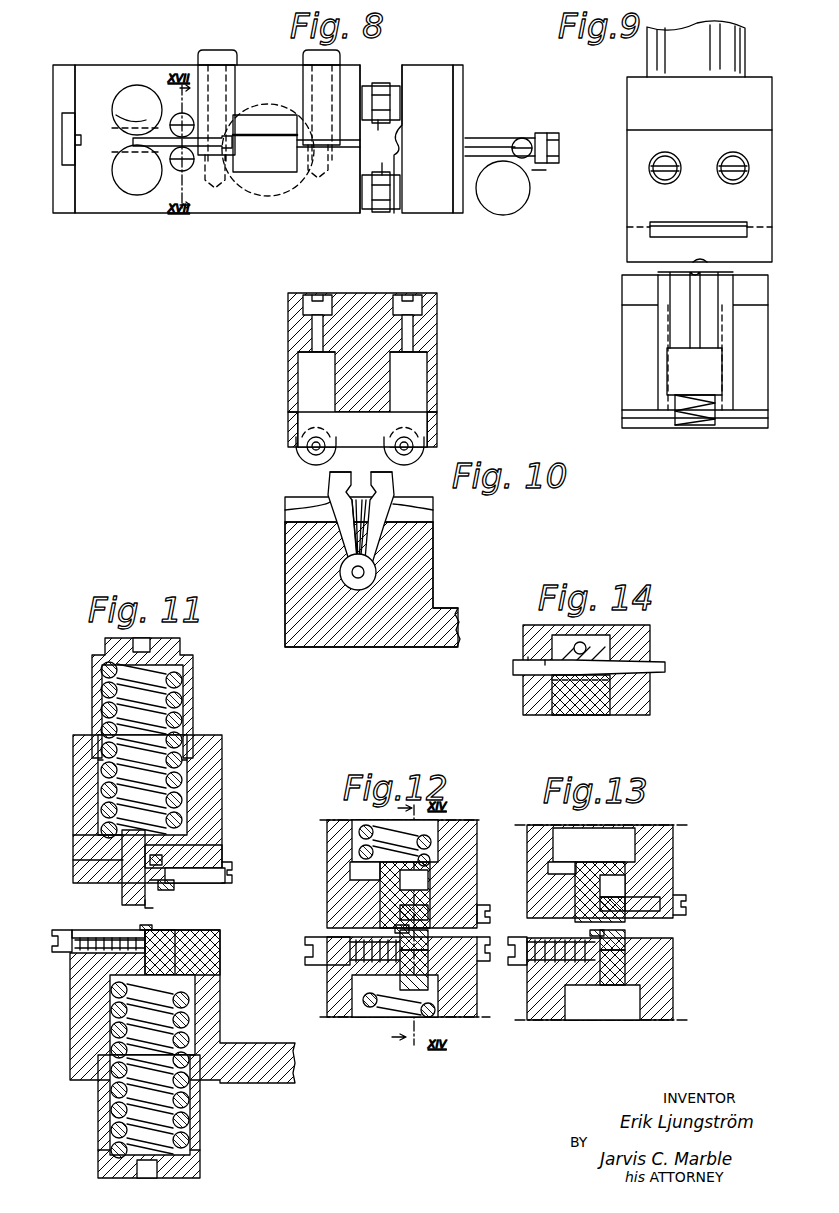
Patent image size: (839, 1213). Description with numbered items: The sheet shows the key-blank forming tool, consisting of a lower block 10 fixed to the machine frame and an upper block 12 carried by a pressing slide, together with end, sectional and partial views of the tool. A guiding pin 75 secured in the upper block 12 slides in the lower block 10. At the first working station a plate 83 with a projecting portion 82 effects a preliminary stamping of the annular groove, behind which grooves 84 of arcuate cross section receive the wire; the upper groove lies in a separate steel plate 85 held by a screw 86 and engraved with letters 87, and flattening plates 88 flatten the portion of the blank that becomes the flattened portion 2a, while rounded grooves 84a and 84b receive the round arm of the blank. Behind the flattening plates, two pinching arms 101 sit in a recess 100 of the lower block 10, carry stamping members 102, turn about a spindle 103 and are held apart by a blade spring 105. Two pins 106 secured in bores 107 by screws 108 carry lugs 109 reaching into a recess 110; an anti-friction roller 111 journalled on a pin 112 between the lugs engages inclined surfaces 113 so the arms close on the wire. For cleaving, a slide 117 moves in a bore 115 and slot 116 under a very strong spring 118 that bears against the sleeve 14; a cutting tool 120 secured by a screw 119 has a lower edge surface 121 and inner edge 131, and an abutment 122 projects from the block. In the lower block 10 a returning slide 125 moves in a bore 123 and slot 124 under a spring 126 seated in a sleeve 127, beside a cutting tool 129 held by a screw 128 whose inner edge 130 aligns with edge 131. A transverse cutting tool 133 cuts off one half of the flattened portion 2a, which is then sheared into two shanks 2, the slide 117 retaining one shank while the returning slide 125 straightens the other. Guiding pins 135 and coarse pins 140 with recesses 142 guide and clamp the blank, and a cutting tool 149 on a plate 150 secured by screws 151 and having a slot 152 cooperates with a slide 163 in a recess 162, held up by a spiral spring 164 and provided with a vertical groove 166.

In FIG. 12, the gripping hooks 2 is at (395, 930).
In FIG. 13, the gripping hooks 2 is at (590, 933).
In FIG. 11, the flattened portion 2a is at (152, 925).
In FIG. 10, the lower block 10 is at (434, 556).
In FIG. 11, the lower block 10 is at (215, 990).
In FIG. 12, the lower block 10 is at (335, 988).
In FIG. 13, the lower block 10 is at (673, 991).
In FIG. 9, the upper block 12 is at (634, 98).
In FIG. 10, the upper block 12 is at (437, 352).
In FIG. 11, the upper block 12 is at (212, 762).
In FIG. 12, the upper block 12 is at (335, 840).
In FIG. 13, the upper block 12 is at (673, 840).
In FIG. 8, the sleeve 14 is at (240, 205).
In FIG. 9, the sleeve 14 is at (745, 58).
In FIG. 11, the sleeve 14 is at (193, 672).
In FIG. 8, the guiding pin 75 is at (513, 200).
In FIG. 8, the projecting portion 82 is at (548, 134).
In FIG. 8, the plate 83 is at (540, 168).
In FIG. 8, the grooves 84 is at (482, 140).
In FIG. 8, the rounded grooves 84a is at (340, 150).
In FIG. 8, the rounded grooves 84b is at (168, 150).
In FIG. 8, the steel plate 85 is at (472, 135).
In FIG. 8, the screw 86 is at (538, 133).
In FIG. 8, the letters 87 is at (508, 138).
In FIG. 8, the flattening plates 88 is at (427, 100).
In FIG. 10, the recess 100 is at (385, 530).
In FIG. 10, the pinching arms 101 is at (330, 505).
In FIG. 10, the stamping members 102 is at (348, 490).
In FIG. 10, the spindle 103 is at (364, 574).
In FIG. 10, the blade spring 105 is at (352, 530).
In FIG. 10, the pins 106 is at (315, 378).
In FIG. 10, the bores 107 is at (300, 358).
In FIG. 10, the screws 108 is at (303, 305).
In FIG. 8, the lugs 109 is at (372, 86).
In FIG. 10, the lugs 109 is at (305, 440).
In FIG. 8, the recess 110 is at (400, 162).
In FIG. 10, the recess 110 is at (433, 420).
In FIG. 14, the recess 110 is at (648, 693).
In FIG. 8, the anti-friction roller 111 is at (383, 165).
In FIG. 10, the anti-friction roller 111 is at (298, 455).
In FIG. 10, the pin 112 is at (398, 446).
In FIG. 14, the pin 112 is at (645, 648).
In FIG. 10, the inclined surfaces 113 is at (330, 476).
In FIG. 11, the bore 115 is at (102, 790).
In FIG. 11, the slot 116 is at (100, 845).
In FIG. 8, the slide 117 is at (278, 160).
In FIG. 11, the slide 117 is at (130, 864).
In FIG. 12, the slide 117 is at (375, 895).
In FIG. 13, the slide 117 is at (580, 902).
In FIG. 11, the spring 118 is at (190, 703).
In FIG. 12, the spring 118 is at (432, 835).
In FIG. 8, the screw 119 is at (262, 65).
In FIG. 11, the screw 119 is at (200, 875).
In FIG. 14, the screw 119 is at (585, 643).
In FIG. 8, the cutting tool 120 is at (243, 115).
In FIG. 11, the cutting tool 120 is at (175, 857).
In FIG. 12, the cutting tool 120 is at (425, 918).
In FIG. 13, the cutting tool 120 is at (612, 905).
In FIG. 14, the cutting tool 120 is at (615, 640).
In FIG. 11, the lower edge surface 121 is at (178, 892).
In FIG. 8, the abutment 122 is at (276, 120).
In FIG. 11, the abutment 122 is at (232, 878).
In FIG. 12, the abutment 122 is at (440, 940).
In FIG. 13, the abutment 122 is at (630, 942).
In FIG. 11, the bore 123 is at (200, 1035).
In FIG. 11, the slot 124 is at (215, 937).
In FIG. 11, the returning slide 125 is at (165, 960).
In FIG. 12, the returning slide 125 is at (432, 965).
In FIG. 13, the returning slide 125 is at (615, 965).
In FIG. 14, the returning slide 125 is at (590, 715).
In FIG. 11, the spring 126 is at (200, 1095).
In FIG. 12, the spring 126 is at (440, 1008).
In FIG. 11, the sleeve 127 is at (200, 1130).
In FIG. 11, the screw 128 is at (62, 952).
In FIG. 11, the cutting tool 129 is at (100, 930).
In FIG. 12, the cutting tool 129 is at (360, 968).
In FIG. 13, the cutting tool 129 is at (560, 968).
In FIG. 11, the inner edge 130 is at (135, 930).
In FIG. 11, the inner edge 131 is at (122, 900).
In FIG. 14, the cutting tool 133 is at (540, 682).
In FIG. 8, the guiding pins 135 is at (178, 113).
In FIG. 8, the coarse pins 140 is at (122, 85).
In FIG. 8, the recesses 142 is at (118, 118).
In FIG. 8, the cutting tool 149 is at (65, 113).
In FIG. 8, the plate 150 is at (62, 185).
In FIG. 9, the plate 150 is at (636, 202).
In FIG. 9, the screws 151 is at (658, 163).
In FIG. 9, the slot 152 is at (650, 232).
In FIG. 9, the recess 162 is at (703, 408).
In FIG. 9, the slide 163 is at (710, 370).
In FIG. 9, the spiral spring 164 is at (690, 418).
In FIG. 9, the vertical groove 166 is at (703, 298).